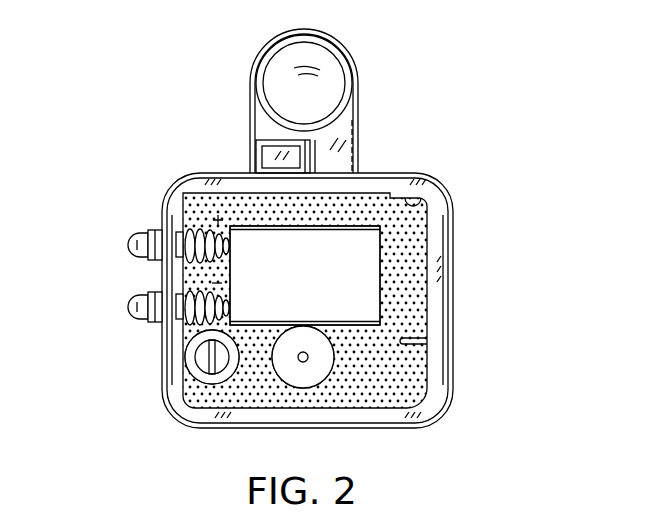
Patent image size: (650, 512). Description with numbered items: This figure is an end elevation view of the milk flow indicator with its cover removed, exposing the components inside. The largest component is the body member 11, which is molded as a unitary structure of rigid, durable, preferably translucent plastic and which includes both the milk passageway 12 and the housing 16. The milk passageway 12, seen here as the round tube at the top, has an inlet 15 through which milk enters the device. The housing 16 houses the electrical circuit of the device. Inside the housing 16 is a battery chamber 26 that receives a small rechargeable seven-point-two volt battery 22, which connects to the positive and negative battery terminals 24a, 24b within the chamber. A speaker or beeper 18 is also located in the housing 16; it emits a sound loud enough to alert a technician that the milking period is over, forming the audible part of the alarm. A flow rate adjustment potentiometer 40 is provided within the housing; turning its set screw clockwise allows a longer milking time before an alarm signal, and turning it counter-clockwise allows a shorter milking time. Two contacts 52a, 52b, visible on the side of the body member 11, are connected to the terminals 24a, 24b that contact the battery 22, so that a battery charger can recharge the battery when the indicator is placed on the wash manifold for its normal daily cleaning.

The body member 11 is at (360, 172).
The milk passageway 12 is at (320, 58).
The inlet 15 is at (254, 78).
The housing 16 is at (450, 255).
The speaker or beeper 18 is at (325, 368).
The battery 22 is at (364, 240).
The positive battery terminal 24a is at (190, 225).
The negative battery terminal 24b is at (190, 330).
The battery chamber 26 is at (421, 203).
The flow rate adjustment potentiometer 40 is at (195, 372).
The contact 52a is at (128, 238).
The contact 52b is at (128, 308).